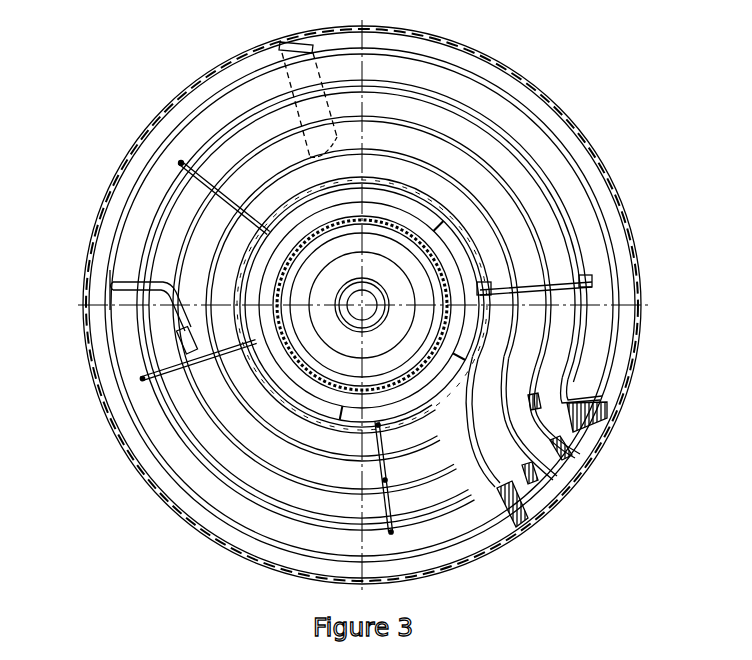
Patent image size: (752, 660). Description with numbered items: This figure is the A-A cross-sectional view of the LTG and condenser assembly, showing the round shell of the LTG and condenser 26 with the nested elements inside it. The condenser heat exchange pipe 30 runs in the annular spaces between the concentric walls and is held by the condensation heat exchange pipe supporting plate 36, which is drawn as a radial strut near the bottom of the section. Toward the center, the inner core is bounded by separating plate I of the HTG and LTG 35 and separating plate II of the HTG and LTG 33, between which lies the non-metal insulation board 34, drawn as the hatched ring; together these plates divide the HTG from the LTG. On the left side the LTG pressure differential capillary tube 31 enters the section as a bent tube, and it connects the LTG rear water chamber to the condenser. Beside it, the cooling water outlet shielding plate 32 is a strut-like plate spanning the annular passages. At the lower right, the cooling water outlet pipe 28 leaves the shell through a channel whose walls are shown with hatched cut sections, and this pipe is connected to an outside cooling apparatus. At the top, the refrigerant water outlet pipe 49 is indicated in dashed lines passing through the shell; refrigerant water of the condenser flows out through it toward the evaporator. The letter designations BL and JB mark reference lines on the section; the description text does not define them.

The shell of the LTG and condenser 26 is at (343, 305).
The cooling water outlet pipe 28 is at (552, 467).
The condenser heat exchange pipe 30 is at (316, 298).
The LTG pressure differential capillary tube 31 is at (119, 329).
The cooling water outlet shielding plate 32 is at (150, 405).
The separating plate II of the HTG and LTG 33 is at (249, 369).
The non-metal insulation board 34 is at (245, 397).
The separating plate I of the HTG and LTG 35 is at (259, 412).
The condensation heat exchange pipe supporting plate 36 is at (444, 514).
The refrigerant water outlet pipe 49 is at (429, 92).
The bearing line BL is at (228, 157).
The junction block JB is at (520, 438).